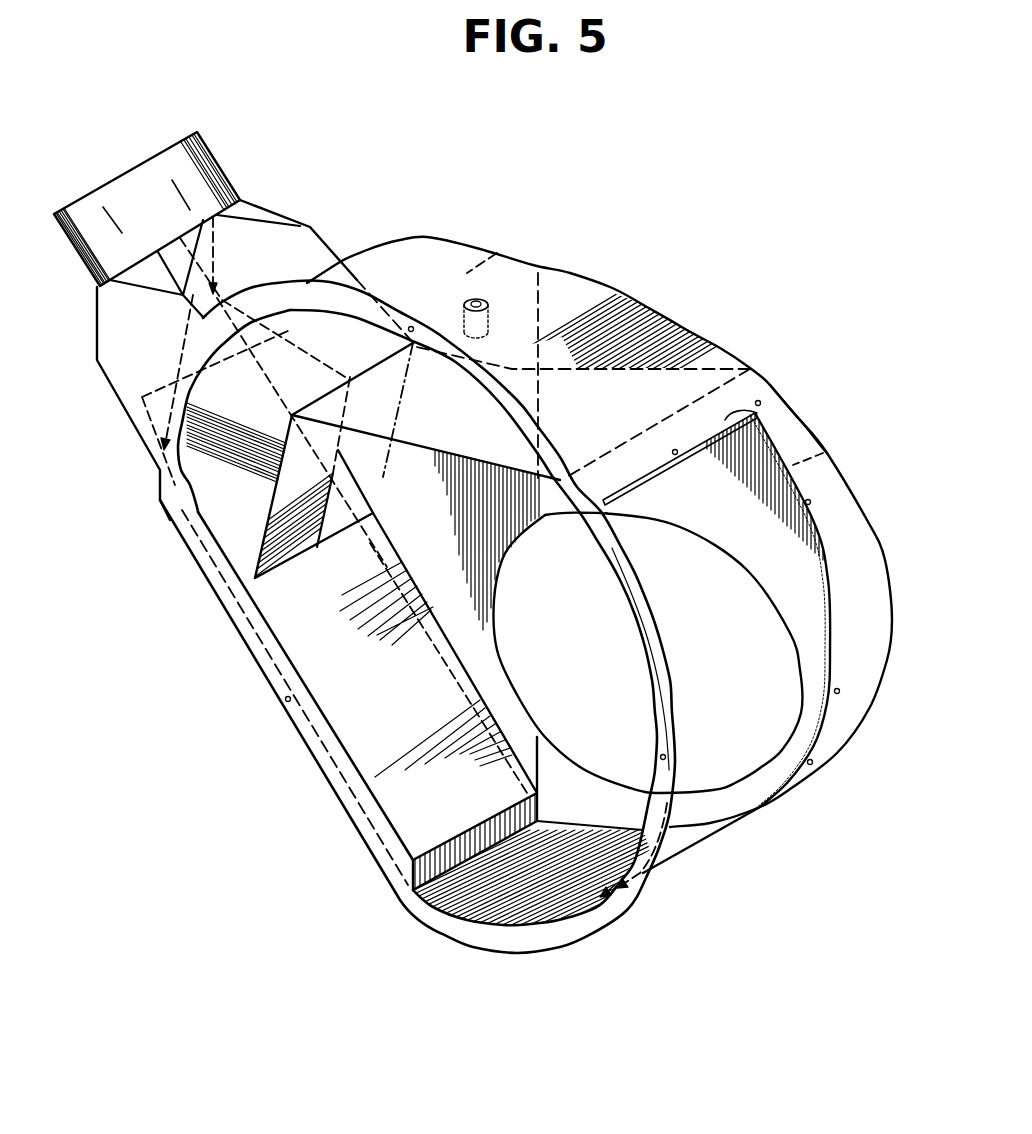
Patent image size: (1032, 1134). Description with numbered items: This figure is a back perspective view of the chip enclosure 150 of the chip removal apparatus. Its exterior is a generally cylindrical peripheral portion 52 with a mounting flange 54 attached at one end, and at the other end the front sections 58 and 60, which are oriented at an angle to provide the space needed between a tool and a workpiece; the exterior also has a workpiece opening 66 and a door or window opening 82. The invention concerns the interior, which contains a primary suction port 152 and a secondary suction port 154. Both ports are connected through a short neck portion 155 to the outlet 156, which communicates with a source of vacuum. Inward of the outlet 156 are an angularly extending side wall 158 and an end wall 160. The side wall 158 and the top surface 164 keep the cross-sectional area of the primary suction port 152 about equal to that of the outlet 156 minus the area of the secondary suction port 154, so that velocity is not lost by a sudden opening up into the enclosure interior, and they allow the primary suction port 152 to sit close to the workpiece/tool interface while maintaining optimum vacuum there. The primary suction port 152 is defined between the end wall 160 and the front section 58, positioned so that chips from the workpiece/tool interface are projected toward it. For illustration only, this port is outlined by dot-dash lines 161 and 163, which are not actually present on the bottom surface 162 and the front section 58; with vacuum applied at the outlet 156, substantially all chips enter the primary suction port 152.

The chip enclosure 150 is at (697, 273).
The primary suction port 152 is at (370, 485).
The secondary suction port 154 is at (467, 847).
The neck portion 155 is at (328, 243).
The outlet 156 is at (133, 168).
The side wall 158 is at (172, 513).
The end wall 160 is at (290, 530).
The dot-dash line 161 is at (338, 540).
The bottom surface 162 is at (438, 706).
The dot-dash line 163 is at (388, 475).
The top surface 164 is at (521, 451).
The front section 58 is at (497, 253).
The front section 60 is at (823, 453).
The workpiece opening 66 is at (647, 653).
The door or window opening 82 is at (756, 405).
The peripheral portion 52 is at (870, 518).
The mounting flange 54 is at (597, 920).